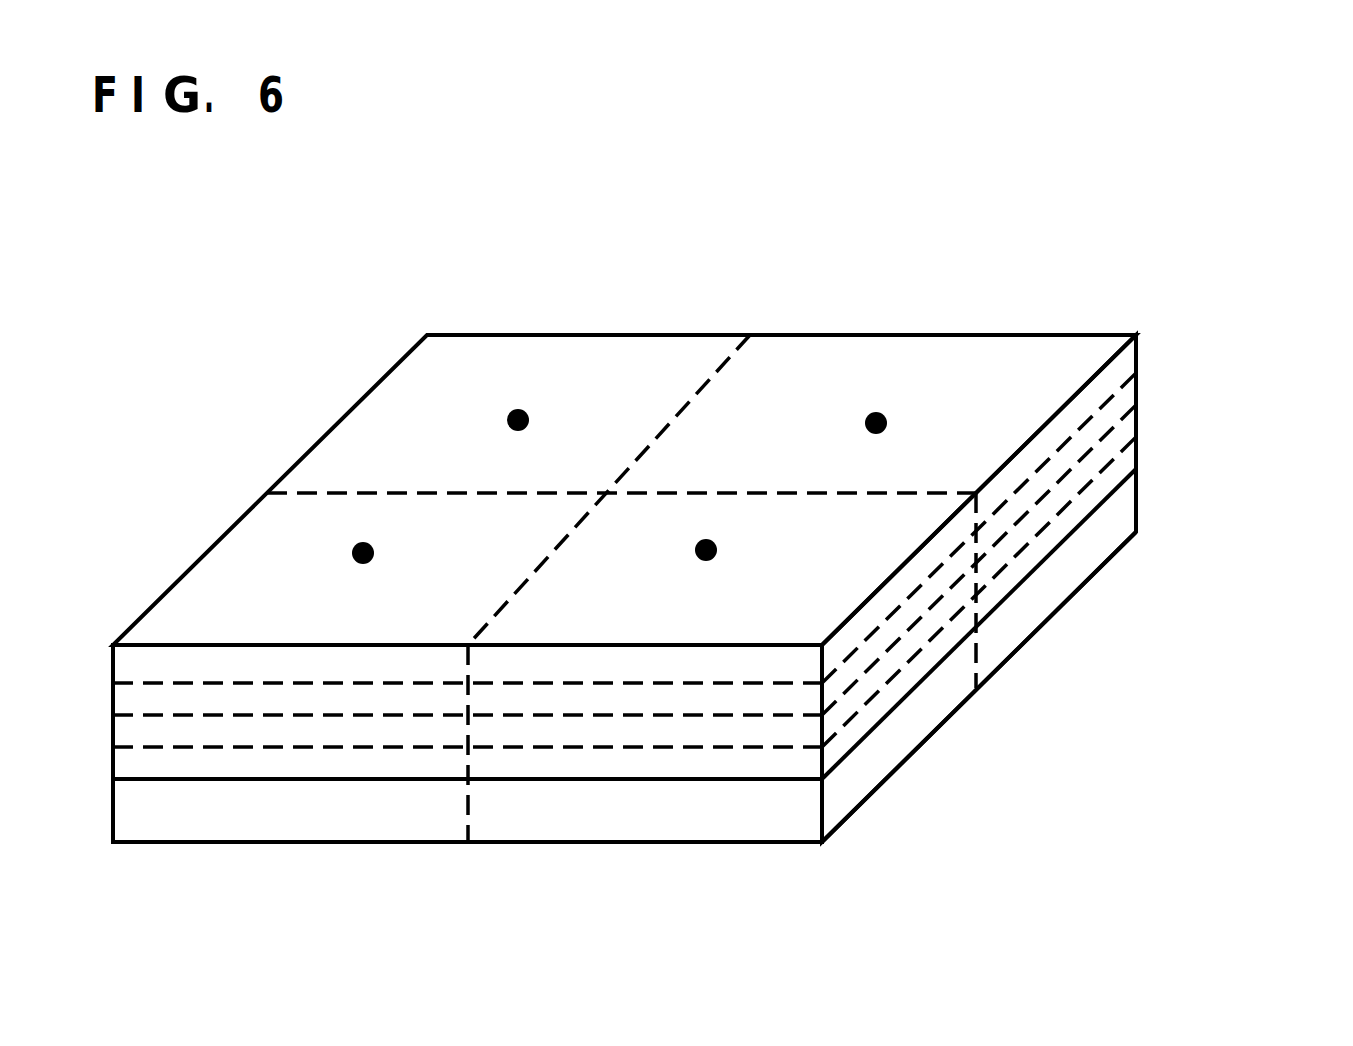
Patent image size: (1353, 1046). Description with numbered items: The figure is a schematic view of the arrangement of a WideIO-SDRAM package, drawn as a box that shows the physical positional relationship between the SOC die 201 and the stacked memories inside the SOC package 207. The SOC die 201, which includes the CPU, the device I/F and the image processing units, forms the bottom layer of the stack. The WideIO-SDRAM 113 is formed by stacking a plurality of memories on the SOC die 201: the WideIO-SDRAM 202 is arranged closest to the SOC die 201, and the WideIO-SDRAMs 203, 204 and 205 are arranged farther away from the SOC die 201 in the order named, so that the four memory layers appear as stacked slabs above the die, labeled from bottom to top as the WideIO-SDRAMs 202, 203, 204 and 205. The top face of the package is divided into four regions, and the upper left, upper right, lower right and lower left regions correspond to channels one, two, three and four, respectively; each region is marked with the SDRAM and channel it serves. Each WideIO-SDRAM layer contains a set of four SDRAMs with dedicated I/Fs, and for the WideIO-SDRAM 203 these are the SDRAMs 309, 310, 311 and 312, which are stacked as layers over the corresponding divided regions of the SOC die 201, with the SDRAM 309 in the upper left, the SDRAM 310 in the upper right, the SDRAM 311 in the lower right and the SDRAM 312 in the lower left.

The SOC package 207 is at (733, 306).
The WideIO-SDRAM 205 is at (1139, 353).
The WideIO-SDRAM 204 is at (1139, 388).
The WideIO-SDRAM 203 is at (1139, 424).
The WideIO-SDRAM 202 is at (1139, 455).
The SOC die 201 is at (1139, 497).
The WideIO-SDRAM 113 is at (1252, 343).
The SDRAM 309 is at (529, 418).
The SDRAM 310 is at (887, 421).
The SDRAM 311 is at (717, 548).
The SDRAM 312 is at (374, 551).